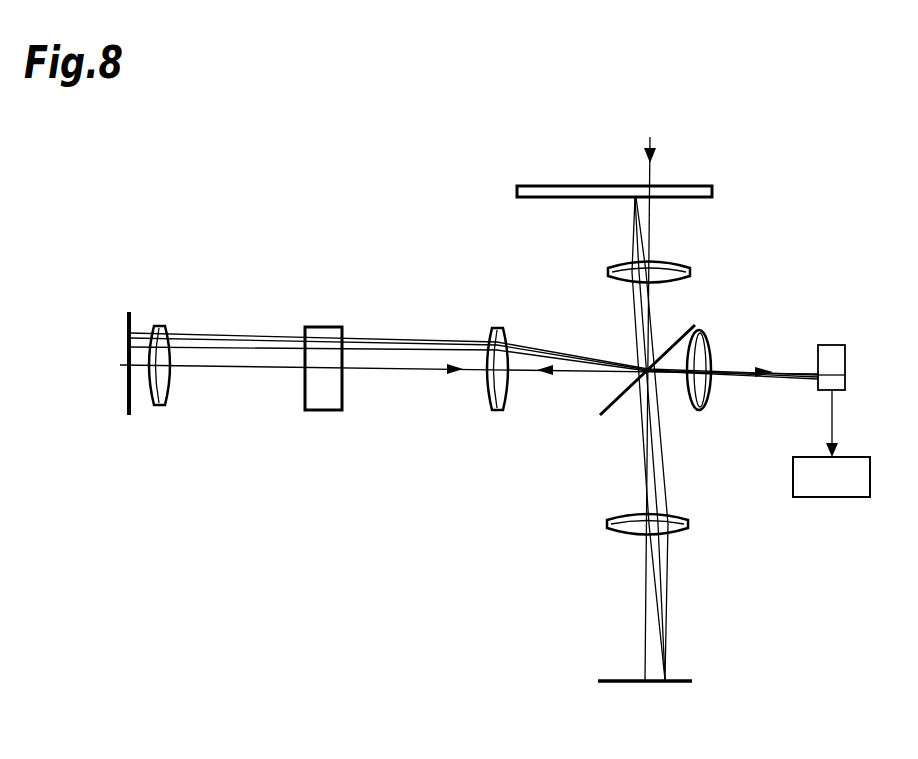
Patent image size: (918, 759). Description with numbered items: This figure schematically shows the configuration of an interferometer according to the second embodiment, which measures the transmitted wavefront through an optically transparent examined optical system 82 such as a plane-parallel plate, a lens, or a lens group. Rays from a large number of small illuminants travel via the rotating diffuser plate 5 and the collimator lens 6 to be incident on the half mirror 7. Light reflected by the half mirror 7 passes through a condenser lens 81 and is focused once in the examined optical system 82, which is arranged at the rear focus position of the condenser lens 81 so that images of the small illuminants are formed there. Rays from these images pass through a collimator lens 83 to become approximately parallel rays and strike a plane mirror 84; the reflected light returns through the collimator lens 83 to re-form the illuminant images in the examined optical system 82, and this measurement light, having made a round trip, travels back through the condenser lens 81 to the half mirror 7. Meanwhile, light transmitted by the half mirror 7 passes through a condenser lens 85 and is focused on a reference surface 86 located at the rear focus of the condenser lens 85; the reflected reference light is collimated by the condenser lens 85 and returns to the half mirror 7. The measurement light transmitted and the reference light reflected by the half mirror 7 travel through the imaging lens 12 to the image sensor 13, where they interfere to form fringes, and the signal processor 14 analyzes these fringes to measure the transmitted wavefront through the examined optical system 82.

The rotating diffuser plate 5 is at (672, 186).
The collimator lens 6 is at (690, 272).
The half mirror 7 is at (622, 392).
The imaging lens 12 is at (695, 330).
The image sensor 13 is at (832, 350).
The signal processor 14 is at (831, 477).
The condenser lens 81 is at (495, 328).
The examined optical system 82 is at (322, 333).
The collimator lens 83 is at (158, 326).
The plane mirror 84 is at (131, 395).
The condenser lens 85 is at (607, 521).
The reference surface 86 is at (630, 680).